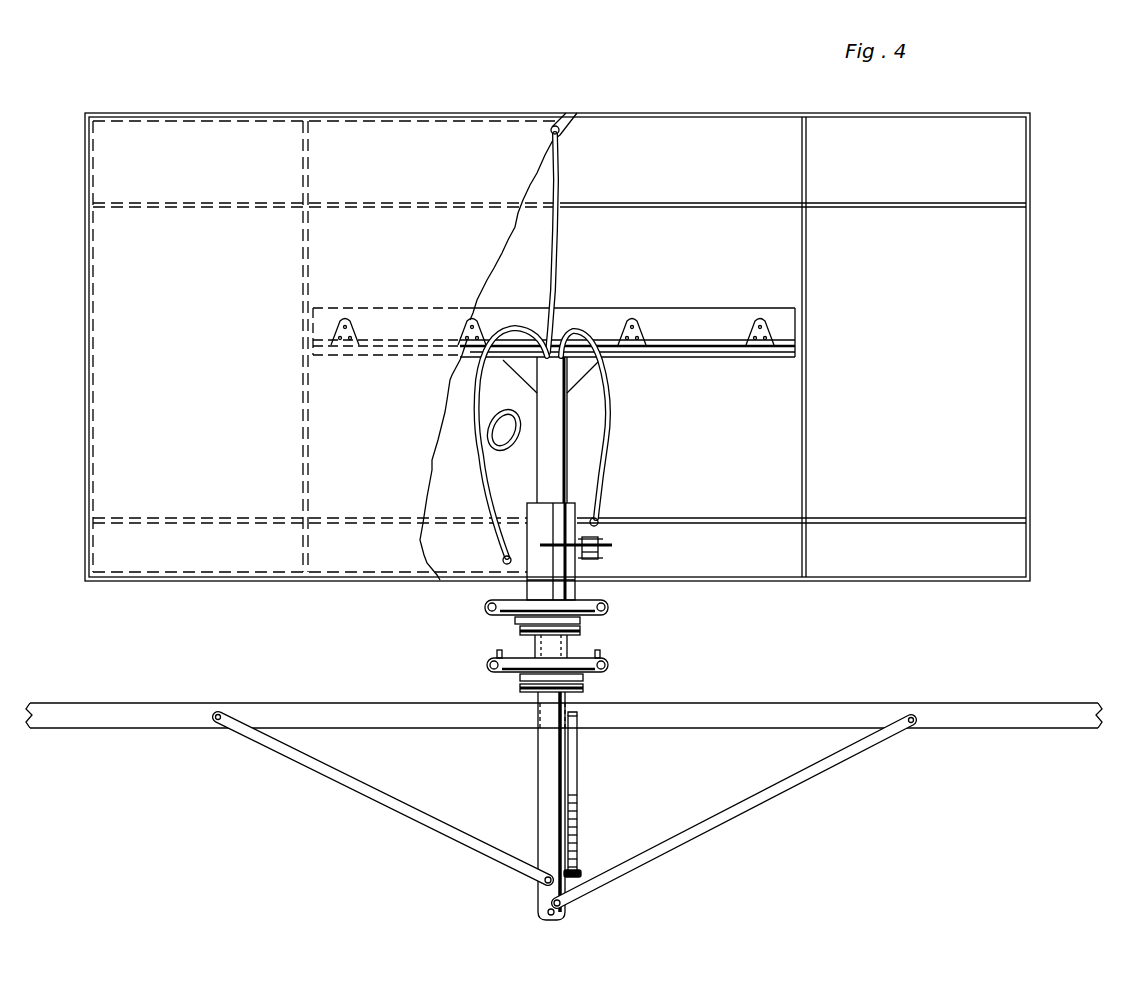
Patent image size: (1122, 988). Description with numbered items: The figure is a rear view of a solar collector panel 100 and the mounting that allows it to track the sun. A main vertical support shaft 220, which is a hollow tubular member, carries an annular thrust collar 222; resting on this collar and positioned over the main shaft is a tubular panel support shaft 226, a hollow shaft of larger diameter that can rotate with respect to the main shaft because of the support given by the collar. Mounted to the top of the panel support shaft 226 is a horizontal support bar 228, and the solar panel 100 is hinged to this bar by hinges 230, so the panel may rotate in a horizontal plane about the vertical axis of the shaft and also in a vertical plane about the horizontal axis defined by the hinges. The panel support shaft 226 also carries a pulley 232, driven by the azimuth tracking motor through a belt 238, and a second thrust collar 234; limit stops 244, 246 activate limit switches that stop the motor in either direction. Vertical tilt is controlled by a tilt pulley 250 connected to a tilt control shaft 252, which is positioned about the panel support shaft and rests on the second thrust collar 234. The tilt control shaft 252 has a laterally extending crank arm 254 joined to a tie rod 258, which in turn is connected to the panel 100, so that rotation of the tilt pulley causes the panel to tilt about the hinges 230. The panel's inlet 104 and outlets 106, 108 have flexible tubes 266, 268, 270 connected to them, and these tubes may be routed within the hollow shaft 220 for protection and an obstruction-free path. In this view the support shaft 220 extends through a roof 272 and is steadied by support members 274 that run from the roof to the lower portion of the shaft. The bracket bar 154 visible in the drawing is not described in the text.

The solar collector panel 100 is at (1042, 151).
The inlet 104 is at (504, 561).
The outlet 106 is at (559, 132).
The outlet 108 is at (600, 516).
The mounting bracket bar 154 is at (575, 318).
The main vertical support shaft 220 is at (553, 792).
The annular thrust collar 222 is at (586, 688).
The tubular panel support shaft 226 is at (567, 468).
The horizontal support bar 228 is at (723, 349).
The hinges 230 is at (350, 322).
The pulley 232 is at (495, 675).
The second thrust collar 234 is at (517, 627).
The belt 238 is at (608, 668).
The limit stop 244 is at (601, 655).
The limit stop 246 is at (522, 658).
The tilt pulley 250 is at (600, 600).
The tilt control shaft 252 is at (578, 577).
The crank arm 254 is at (600, 542).
The tie rod 258 is at (604, 561).
The flexible tube 266 is at (483, 487).
The flexible tube 268 is at (563, 196).
The flexible tube 270 is at (606, 424).
The roof 272 is at (963, 713).
The support members 274 is at (372, 792).